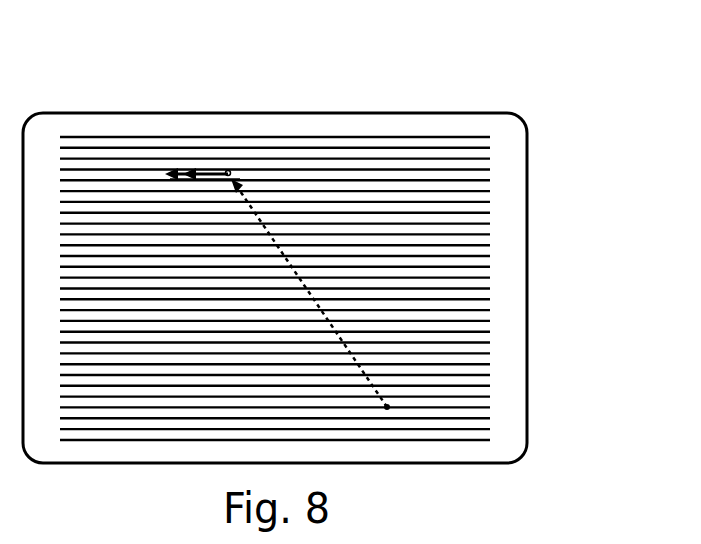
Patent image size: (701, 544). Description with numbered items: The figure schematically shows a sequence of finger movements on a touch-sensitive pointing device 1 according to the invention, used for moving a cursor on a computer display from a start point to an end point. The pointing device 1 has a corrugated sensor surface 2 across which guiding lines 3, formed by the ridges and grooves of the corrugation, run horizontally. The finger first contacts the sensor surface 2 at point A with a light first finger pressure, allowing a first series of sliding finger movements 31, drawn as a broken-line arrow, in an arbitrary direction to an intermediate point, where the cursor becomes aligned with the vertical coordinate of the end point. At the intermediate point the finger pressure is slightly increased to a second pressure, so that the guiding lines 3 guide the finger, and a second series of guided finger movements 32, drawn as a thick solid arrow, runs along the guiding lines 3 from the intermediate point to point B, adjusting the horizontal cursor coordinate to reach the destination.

The pointing device 1 is at (432, 114).
The sensor surface 2 is at (443, 183).
The guiding lines 3 is at (418, 285).
The first series of sliding finger movements 31 is at (303, 283).
The second series of guided finger movements 32 is at (200, 173).